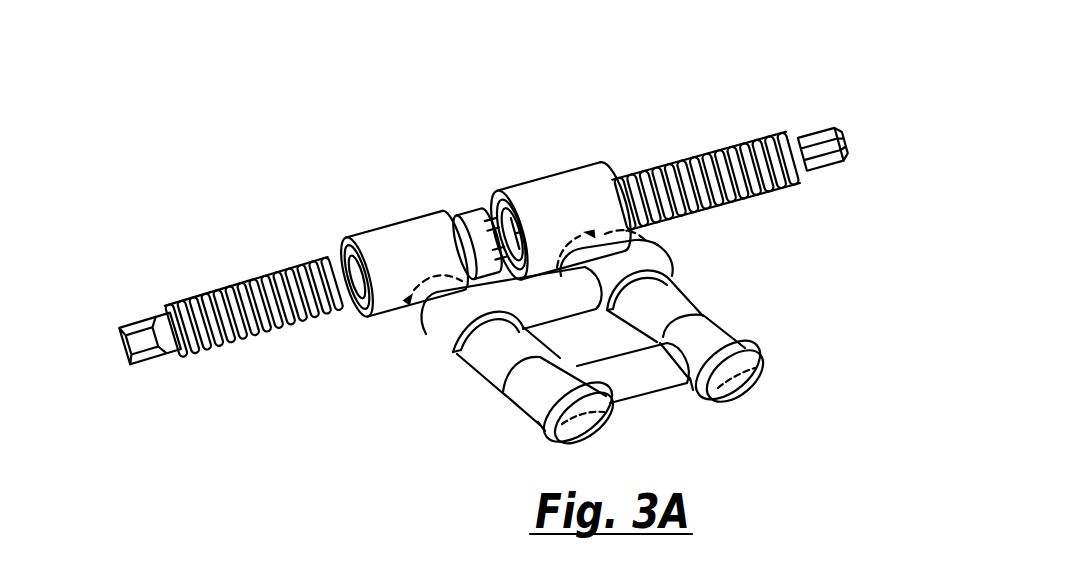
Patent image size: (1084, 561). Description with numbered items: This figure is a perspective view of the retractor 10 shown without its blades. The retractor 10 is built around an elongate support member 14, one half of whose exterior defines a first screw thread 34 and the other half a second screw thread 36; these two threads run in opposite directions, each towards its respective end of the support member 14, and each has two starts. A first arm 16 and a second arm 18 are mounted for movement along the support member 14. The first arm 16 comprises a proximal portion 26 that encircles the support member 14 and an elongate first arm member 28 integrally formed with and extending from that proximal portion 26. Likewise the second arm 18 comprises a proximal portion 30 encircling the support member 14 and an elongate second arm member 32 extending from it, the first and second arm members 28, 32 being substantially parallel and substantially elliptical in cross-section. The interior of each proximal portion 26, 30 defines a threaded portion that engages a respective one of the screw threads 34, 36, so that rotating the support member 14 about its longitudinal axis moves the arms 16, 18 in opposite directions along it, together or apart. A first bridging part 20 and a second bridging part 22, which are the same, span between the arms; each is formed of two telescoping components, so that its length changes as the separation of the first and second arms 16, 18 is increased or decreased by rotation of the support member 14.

The retractor 10 is at (478, 138).
The support member 14 is at (300, 315).
The first arm 16 is at (404, 306).
The second arm 18 is at (622, 226).
The first bridging part 20 is at (447, 322).
The second bridging part 22 is at (535, 393).
The proximal portion 26 is at (393, 234).
The first arm member 28 is at (497, 353).
The proximal portion 30 is at (553, 190).
The second arm member 32 is at (670, 297).
The first screw thread 34 is at (232, 332).
The second screw thread 36 is at (765, 190).